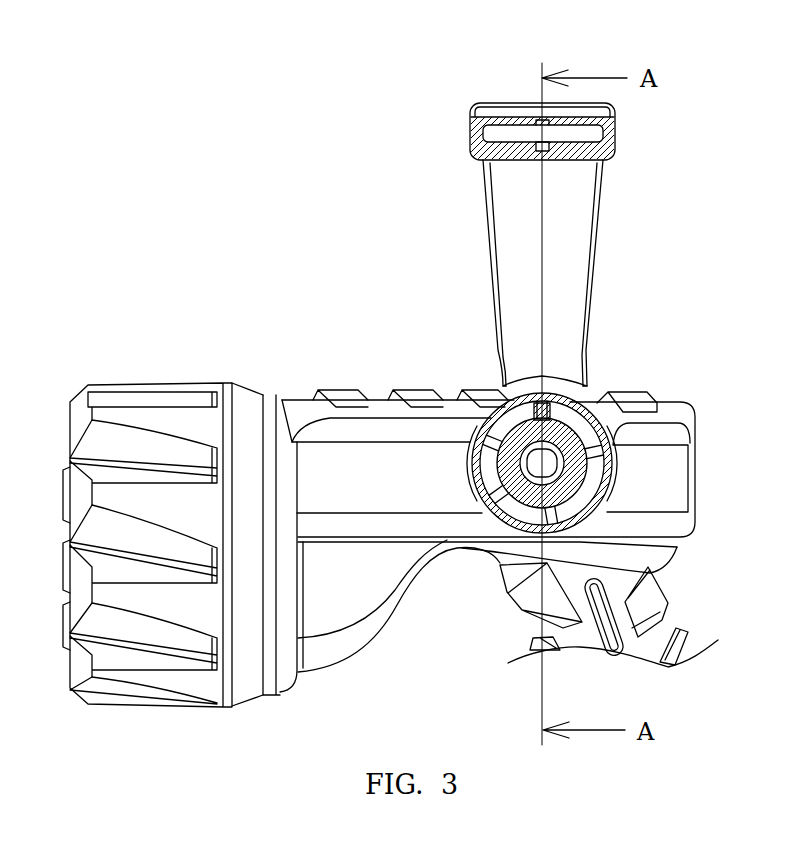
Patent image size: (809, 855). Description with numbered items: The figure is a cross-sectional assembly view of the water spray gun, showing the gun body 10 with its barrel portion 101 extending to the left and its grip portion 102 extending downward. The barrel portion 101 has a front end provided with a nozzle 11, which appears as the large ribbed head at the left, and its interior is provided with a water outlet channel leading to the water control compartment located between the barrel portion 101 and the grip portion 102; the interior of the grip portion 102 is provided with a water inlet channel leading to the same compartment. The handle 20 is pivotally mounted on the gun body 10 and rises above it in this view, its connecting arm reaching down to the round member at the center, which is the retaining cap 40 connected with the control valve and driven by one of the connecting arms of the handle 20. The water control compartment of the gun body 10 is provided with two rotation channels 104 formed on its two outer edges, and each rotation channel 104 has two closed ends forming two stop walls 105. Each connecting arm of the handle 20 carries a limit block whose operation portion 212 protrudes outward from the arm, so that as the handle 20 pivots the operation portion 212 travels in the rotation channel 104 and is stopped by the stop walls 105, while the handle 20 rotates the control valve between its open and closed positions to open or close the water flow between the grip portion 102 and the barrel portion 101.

The gun body 10 is at (704, 525).
The nozzle 11 is at (100, 392).
The handle 20 is at (479, 98).
The operation portion 212 is at (502, 384).
The retaining cap 40 is at (510, 556).
The barrel portion 101 is at (373, 412).
The grip portion 102 is at (505, 607).
The rotation channel 104 is at (590, 384).
The stop wall 105 is at (470, 447).